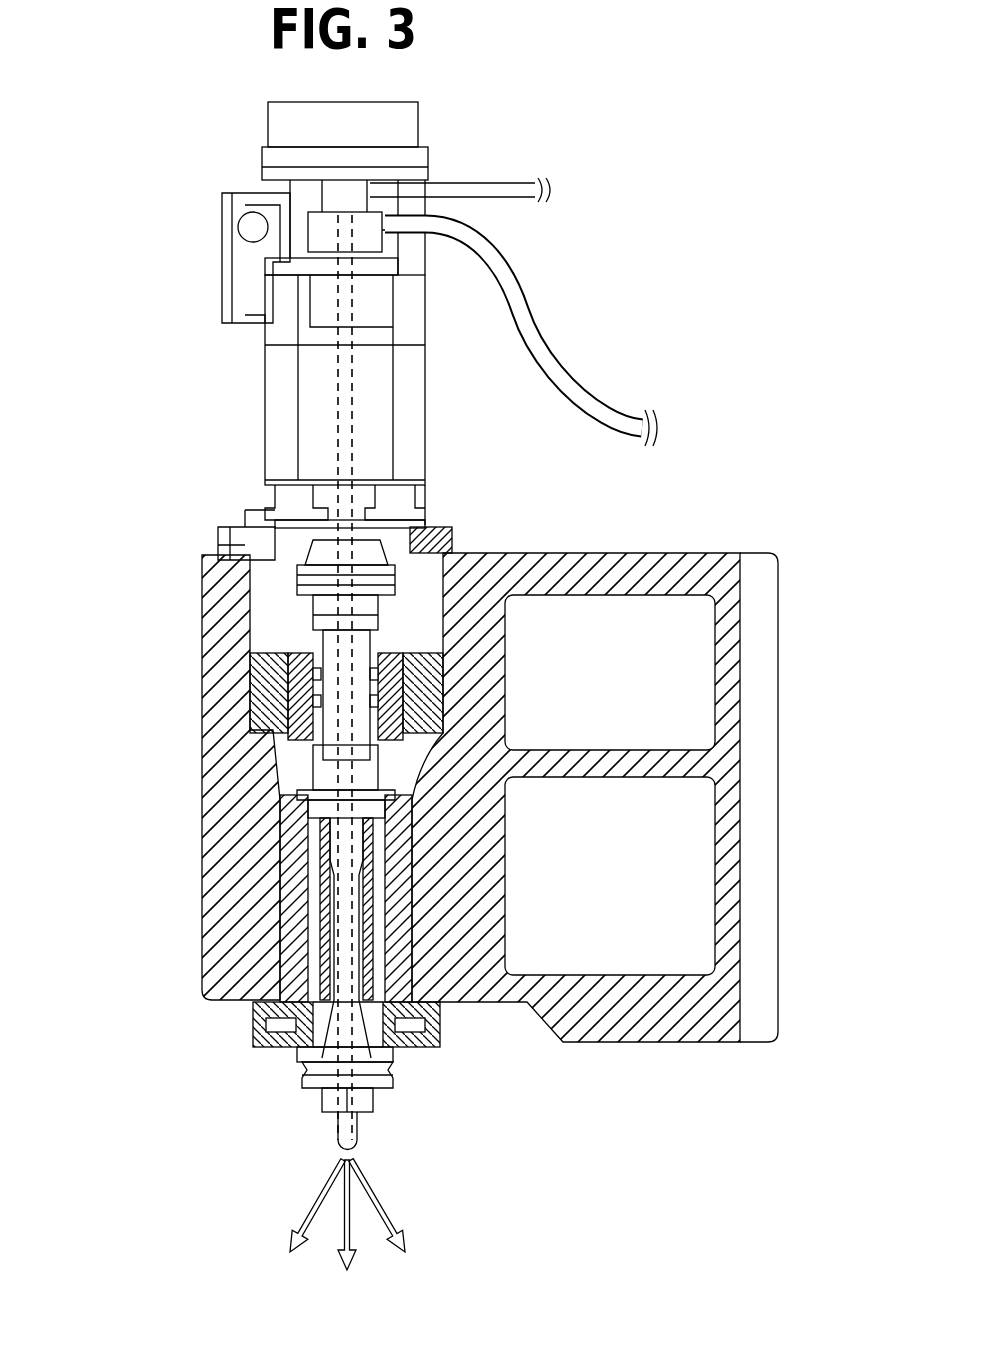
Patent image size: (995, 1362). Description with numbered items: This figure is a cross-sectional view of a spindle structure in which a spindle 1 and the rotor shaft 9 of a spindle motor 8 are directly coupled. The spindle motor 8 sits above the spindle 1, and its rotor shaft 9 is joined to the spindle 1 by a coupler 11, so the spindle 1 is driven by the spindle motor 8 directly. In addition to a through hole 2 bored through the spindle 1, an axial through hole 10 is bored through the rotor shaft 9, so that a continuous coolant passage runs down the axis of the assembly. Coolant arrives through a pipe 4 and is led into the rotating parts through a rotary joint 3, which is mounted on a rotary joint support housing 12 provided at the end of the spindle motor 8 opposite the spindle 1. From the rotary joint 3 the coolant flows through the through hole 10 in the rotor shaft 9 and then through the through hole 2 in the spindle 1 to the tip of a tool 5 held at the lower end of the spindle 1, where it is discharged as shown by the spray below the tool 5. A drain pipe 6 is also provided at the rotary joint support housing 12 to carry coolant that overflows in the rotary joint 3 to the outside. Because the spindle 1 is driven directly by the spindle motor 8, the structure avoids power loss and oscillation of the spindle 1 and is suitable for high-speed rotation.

The spindle 1 is at (304, 761).
The through hole 2 is at (412, 947).
The rotary joint 3 is at (306, 199).
The pipe 4 is at (488, 165).
The tool 5 is at (367, 1128).
The drain pipe 6 is at (542, 298).
The spindle motor 8 is at (256, 354).
The rotor shaft 9 is at (367, 392).
The through hole 10 is at (336, 426).
The coupler 11 is at (290, 594).
The rotary joint support housing 12 is at (325, 230).